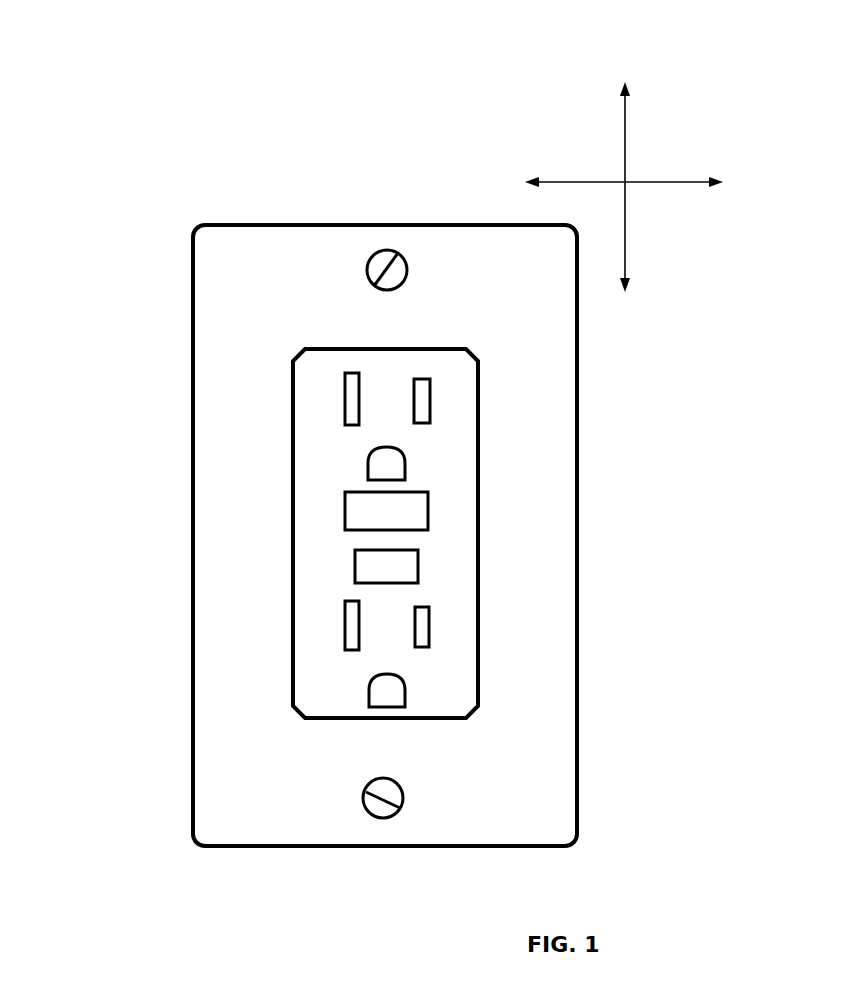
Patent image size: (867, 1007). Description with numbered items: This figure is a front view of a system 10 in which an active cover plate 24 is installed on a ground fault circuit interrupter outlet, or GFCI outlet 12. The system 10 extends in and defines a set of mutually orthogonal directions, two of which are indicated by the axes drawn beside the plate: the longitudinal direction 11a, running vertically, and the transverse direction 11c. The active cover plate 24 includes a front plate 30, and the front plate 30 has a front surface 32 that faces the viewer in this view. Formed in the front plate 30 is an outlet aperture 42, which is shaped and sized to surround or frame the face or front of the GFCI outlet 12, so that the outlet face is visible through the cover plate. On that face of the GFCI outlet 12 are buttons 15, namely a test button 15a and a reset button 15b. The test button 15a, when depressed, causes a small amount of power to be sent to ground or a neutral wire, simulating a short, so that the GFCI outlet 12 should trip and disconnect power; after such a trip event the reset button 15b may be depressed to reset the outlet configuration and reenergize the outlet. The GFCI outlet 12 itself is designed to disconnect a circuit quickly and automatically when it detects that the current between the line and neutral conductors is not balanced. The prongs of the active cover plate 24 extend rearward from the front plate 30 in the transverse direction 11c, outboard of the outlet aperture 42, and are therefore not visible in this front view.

The system 10 is at (218, 106).
The longitudinal direction 11a is at (625, 132).
The transverse direction 11c is at (650, 182).
The GFCI outlet 12 is at (355, 580).
The buttons 15 is at (242, 572).
The test button 15a is at (362, 505).
The reset button 15b is at (367, 568).
The active cover plate 24 is at (582, 342).
The front plate 30 is at (465, 535).
The front surface 32 is at (465, 535).
The outlet aperture 42 is at (300, 673).